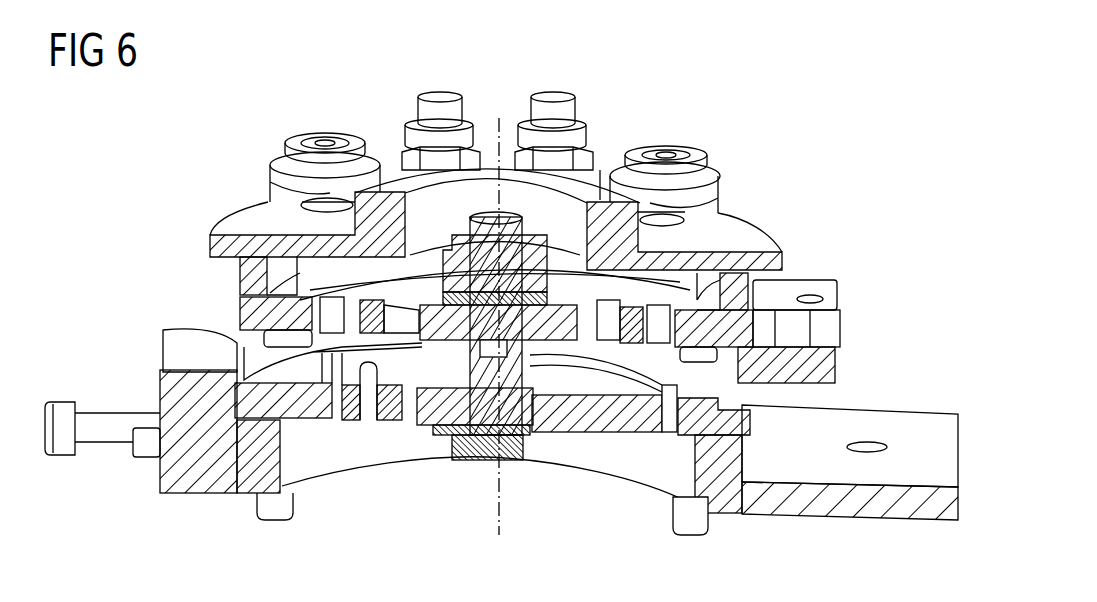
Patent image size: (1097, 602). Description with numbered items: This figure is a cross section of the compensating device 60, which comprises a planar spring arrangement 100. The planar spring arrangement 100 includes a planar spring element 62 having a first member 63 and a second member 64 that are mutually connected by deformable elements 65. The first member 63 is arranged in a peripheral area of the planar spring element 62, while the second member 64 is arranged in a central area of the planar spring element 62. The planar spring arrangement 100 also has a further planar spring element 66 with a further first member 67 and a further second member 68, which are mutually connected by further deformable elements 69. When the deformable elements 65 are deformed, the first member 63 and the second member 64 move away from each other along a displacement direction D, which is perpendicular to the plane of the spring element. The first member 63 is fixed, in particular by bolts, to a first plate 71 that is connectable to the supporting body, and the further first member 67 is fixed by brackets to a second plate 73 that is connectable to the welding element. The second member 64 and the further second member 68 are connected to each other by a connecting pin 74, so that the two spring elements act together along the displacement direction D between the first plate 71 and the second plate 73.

The compensating device 60 is at (858, 190).
The planar spring element 62 is at (808, 270).
The first member 63 is at (245, 315).
The second member 64 is at (573, 430).
The deformable elements 65 is at (400, 300).
The further planar spring element 66 is at (252, 440).
The further first member 67 is at (695, 432).
The further second member 68 is at (438, 422).
The further deformable elements 69 is at (357, 422).
The first plate 71 is at (748, 238).
The second plate 73 is at (887, 505).
The connecting pin 74 is at (530, 390).
The planar spring arrangement 100 is at (145, 285).
The displacement direction D is at (500, 533).